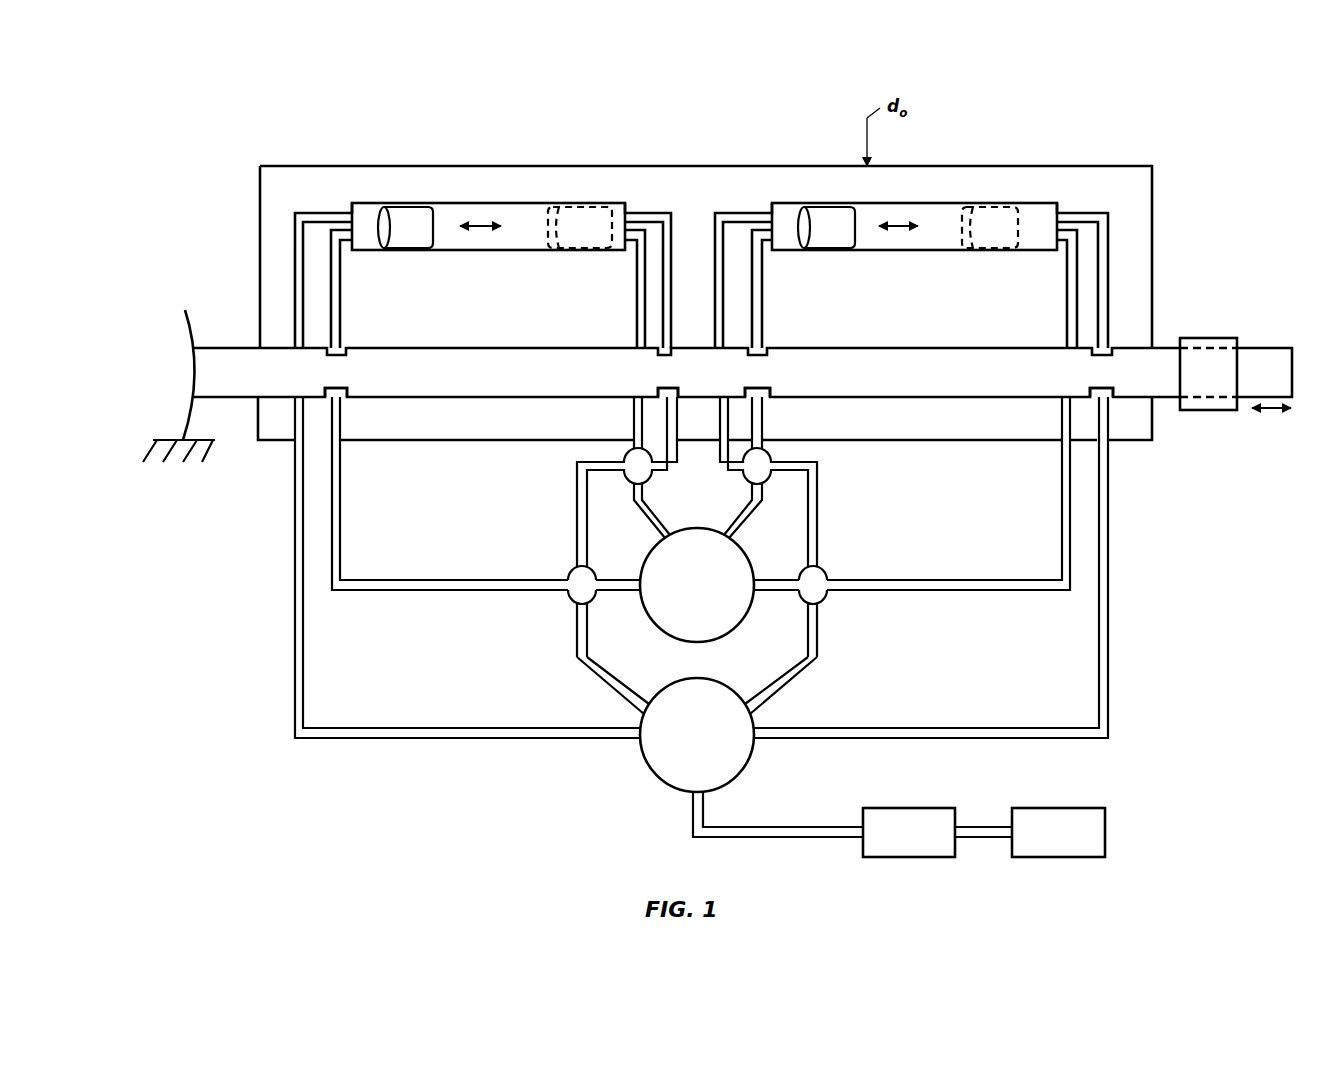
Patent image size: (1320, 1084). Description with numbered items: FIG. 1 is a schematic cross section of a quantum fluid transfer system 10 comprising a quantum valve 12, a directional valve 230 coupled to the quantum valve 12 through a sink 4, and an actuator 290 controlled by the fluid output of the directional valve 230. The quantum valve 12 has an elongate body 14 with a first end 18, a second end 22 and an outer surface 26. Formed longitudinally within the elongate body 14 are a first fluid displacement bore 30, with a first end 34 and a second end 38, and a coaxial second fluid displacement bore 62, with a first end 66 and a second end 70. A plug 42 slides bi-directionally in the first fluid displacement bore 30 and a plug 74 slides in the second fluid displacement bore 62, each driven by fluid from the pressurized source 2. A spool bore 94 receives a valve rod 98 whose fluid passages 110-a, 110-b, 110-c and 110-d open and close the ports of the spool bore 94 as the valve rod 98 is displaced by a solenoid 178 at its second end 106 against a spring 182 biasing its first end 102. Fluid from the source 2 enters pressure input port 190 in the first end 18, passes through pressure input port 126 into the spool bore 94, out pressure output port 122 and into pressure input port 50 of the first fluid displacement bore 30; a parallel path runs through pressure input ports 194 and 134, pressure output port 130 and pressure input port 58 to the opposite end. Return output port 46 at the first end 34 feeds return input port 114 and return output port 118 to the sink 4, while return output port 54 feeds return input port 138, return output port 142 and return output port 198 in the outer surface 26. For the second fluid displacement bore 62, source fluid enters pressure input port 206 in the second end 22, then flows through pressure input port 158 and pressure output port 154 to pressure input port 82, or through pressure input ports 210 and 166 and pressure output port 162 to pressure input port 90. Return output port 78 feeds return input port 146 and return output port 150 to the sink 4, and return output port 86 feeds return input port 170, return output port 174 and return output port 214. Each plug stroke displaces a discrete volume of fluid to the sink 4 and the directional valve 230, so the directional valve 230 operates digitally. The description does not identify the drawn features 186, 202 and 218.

The fluid source 2 is at (727, 615).
The sink 4 is at (727, 768).
The quantum fluid transfer system 10 is at (1118, 123).
The quantum valve 12 is at (1216, 232).
The elongate body 14 is at (922, 185).
The first end 18 is at (308, 183).
The second end 22 is at (1132, 187).
The outer surface 26 is at (678, 166).
The first fluid displacement bore 30 is at (548, 203).
The first end 34 is at (372, 203).
The second end 38 is at (617, 203).
The plug 42 is at (413, 203).
The return output port 46 is at (310, 193).
The pressure input port 50 is at (370, 273).
The return output port 54 is at (647, 203).
The pressure input port 58 is at (610, 263).
The second fluid displacement bore 62 is at (1033, 203).
The first end 66 is at (785, 222).
The second end 70 is at (1050, 203).
The plug 74 is at (830, 203).
The return output port 78 is at (732, 200).
The pressure input port 82 is at (790, 275).
The return output port 86 is at (1103, 202).
The pressure input port 90 is at (1040, 263).
The spool bore 94 is at (248, 340).
The valve rod 98 is at (938, 378).
The first end 102 is at (243, 390).
The second end 106 is at (1260, 363).
The fluid passage 110-a is at (342, 362).
The fluid passage 110-b is at (665, 358).
The fluid passage 110-c is at (754, 360).
The fluid passage 110-d is at (1100, 358).
The return input port 114 is at (315, 322).
The return output port 118 is at (323, 428).
The pressure output port 122 is at (383, 332).
The pressure input port 126 is at (370, 418).
The pressure output port 130 is at (598, 330).
The pressure input port 134 is at (600, 405).
The return input port 138 is at (693, 317).
The return output port 142 is at (700, 400).
The return input port 146 is at (740, 323).
The return output port 150 is at (740, 417).
The pressure output port 154 is at (805, 332).
The pressure input port 158 is at (793, 417).
The pressure output port 162 is at (1030, 330).
The pressure input port 166 is at (1035, 407).
The return input port 170 is at (1127, 328).
The return output port 174 is at (1133, 427).
The solenoid 178 is at (1203, 347).
The spring 182 is at (185, 418).
The return outlet 186 is at (280, 465).
The pressure input port 190 is at (370, 460).
The pressure input port 194 is at (600, 432).
The return output port 198 is at (695, 443).
The return line 202 is at (732, 462).
The pressure input port 206 is at (800, 455).
The pressure input port 210 is at (1038, 452).
The return output port 214 is at (1120, 463).
The sink output line 218 is at (772, 830).
The directional valve 230 is at (933, 845).
The actuator 290 is at (1072, 840).